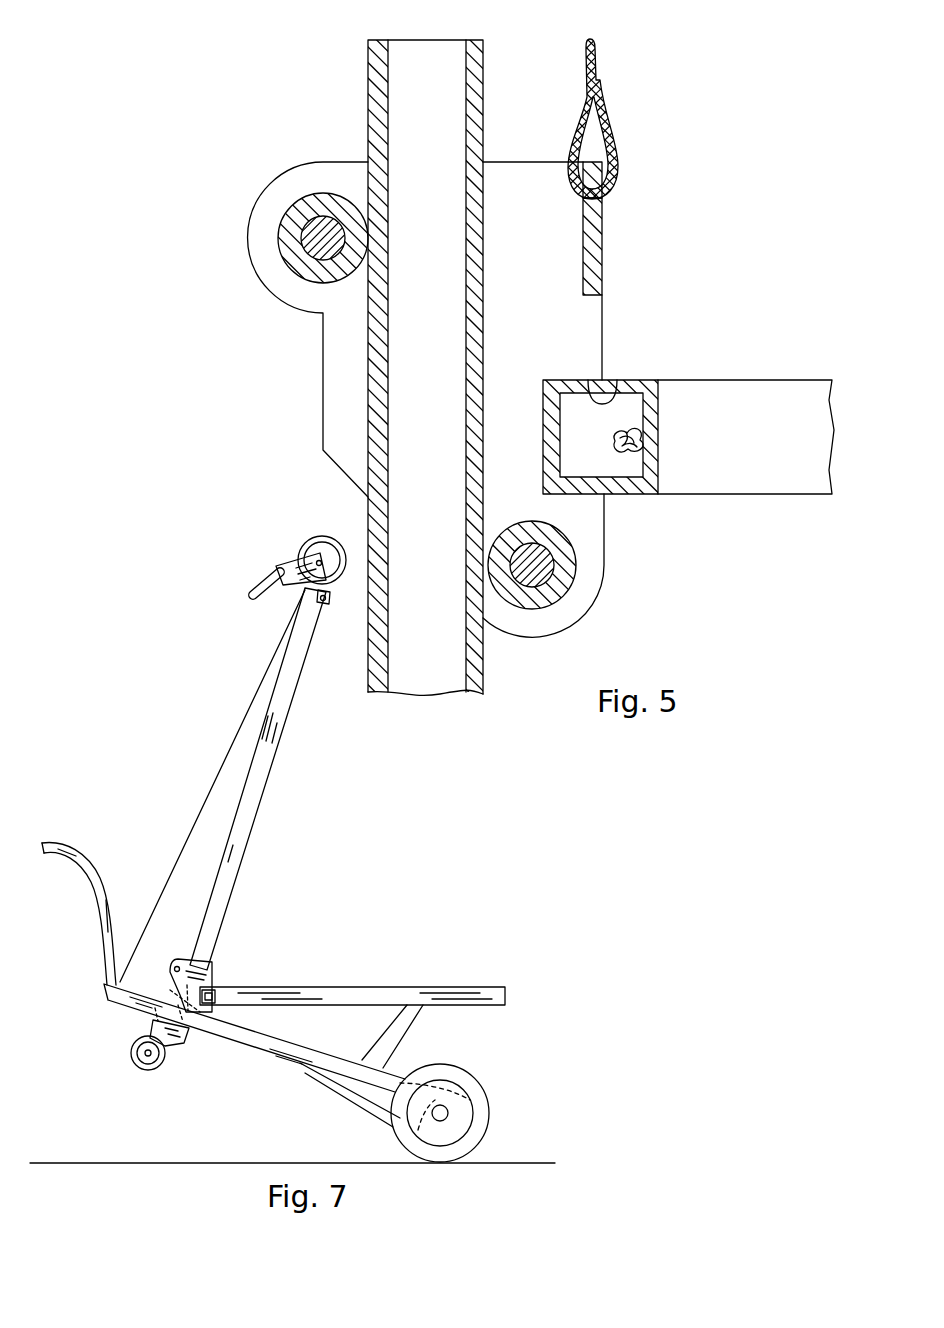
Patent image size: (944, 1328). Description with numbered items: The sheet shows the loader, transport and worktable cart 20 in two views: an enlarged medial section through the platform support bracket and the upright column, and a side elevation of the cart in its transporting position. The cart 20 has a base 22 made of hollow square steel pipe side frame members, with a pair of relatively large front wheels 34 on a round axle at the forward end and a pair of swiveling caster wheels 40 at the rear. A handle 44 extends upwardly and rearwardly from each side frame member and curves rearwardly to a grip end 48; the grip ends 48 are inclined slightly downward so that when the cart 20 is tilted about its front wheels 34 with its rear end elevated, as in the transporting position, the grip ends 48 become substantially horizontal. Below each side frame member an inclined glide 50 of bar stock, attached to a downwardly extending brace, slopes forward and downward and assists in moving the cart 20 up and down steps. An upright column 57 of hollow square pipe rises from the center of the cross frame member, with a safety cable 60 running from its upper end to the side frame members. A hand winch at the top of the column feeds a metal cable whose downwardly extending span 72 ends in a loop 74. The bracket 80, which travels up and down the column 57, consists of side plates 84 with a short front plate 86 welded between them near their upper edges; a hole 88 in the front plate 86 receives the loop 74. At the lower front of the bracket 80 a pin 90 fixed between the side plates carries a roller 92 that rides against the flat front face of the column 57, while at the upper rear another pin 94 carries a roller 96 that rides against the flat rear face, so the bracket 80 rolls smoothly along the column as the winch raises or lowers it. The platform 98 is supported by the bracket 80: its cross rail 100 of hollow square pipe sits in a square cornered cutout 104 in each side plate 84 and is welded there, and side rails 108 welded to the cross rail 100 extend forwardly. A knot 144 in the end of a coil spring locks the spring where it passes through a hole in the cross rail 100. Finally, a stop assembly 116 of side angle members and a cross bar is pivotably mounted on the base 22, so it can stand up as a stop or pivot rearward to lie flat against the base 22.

In FIG. 7, the loader, transport and worktable cart 20 is at (162, 677).
In FIG. 7, the base 22 is at (257, 1049).
In FIG. 7, the front wheel 34 is at (490, 1103).
In FIG. 7, the caster wheel 40 is at (130, 1052).
In FIG. 7, the handle 44 is at (91, 866).
In FIG. 7, the grip end 48 is at (52, 841).
In FIG. 7, the inclined glide 50 is at (342, 1092).
In FIG. 5, the upright column 57 is at (368, 51).
In FIG. 7, the upright column 57 is at (268, 725).
In FIG. 7, the cable 60 is at (292, 562).
In FIG. 5, the downwardly extending span 72 is at (596, 57).
In FIG. 5, the loop 74 is at (606, 118).
In FIG. 7, the bracket 80 is at (184, 966).
In FIG. 5, the side plate 84 is at (563, 325).
In FIG. 5, the front plate 86 is at (596, 265).
In FIG. 5, the hole 88 is at (604, 194).
In FIG. 5, the pin 90 is at (553, 577).
In FIG. 5, the roller 92 is at (577, 551).
In FIG. 5, the pin 94 is at (300, 240).
In FIG. 5, the roller 96 is at (305, 192).
In FIG. 7, the platform 98 is at (479, 1007).
In FIG. 5, the cross rail 100 is at (658, 417).
In FIG. 5, the cutout 104 is at (620, 380).
In FIG. 5, the side rail 108 is at (815, 380).
In FIG. 7, the stop assembly 116 is at (401, 1040).
In FIG. 5, the knot 144 is at (642, 451).